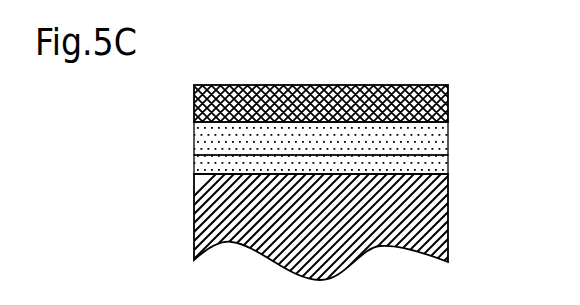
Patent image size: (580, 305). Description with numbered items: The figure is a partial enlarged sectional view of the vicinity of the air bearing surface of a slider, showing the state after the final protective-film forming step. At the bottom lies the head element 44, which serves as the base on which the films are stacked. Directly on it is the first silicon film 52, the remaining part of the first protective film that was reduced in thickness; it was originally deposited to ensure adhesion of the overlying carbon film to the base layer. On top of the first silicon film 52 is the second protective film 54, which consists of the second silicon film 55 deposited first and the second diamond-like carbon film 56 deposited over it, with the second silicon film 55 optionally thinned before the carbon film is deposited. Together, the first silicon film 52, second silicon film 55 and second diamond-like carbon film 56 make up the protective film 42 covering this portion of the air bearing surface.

The protective film 42 is at (288, 136).
The head element 44 is at (194, 222).
The first silicon film 52 is at (193, 171).
The second protective film 54 is at (252, 124).
The second silicon film 55 is at (193, 149).
The second diamond-like carbon film 56 is at (193, 104).